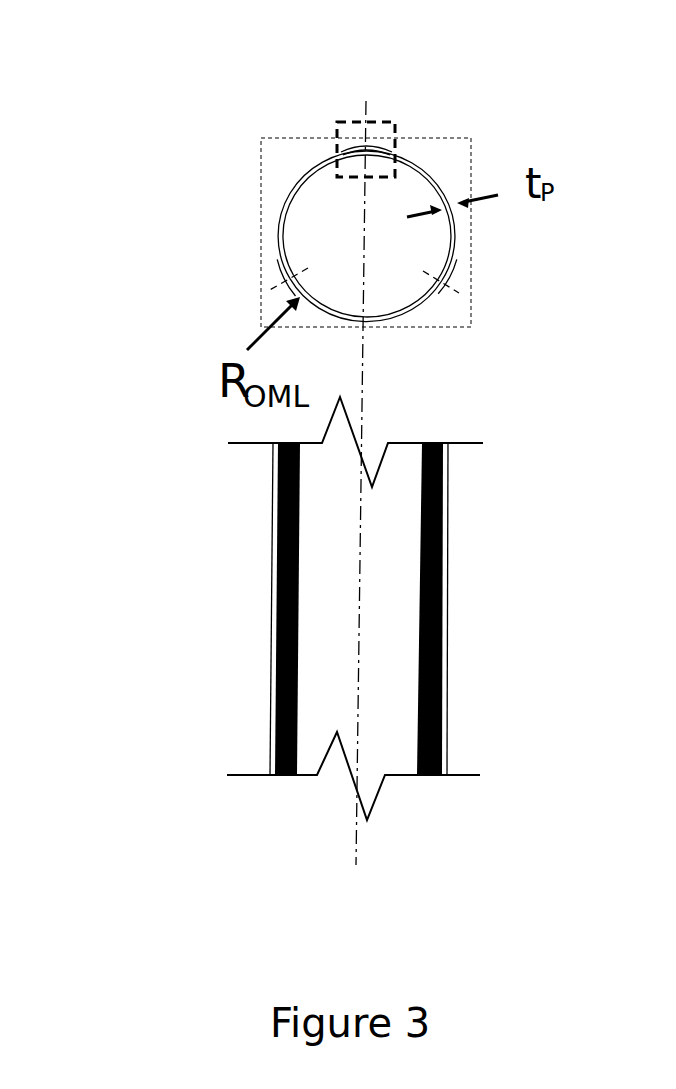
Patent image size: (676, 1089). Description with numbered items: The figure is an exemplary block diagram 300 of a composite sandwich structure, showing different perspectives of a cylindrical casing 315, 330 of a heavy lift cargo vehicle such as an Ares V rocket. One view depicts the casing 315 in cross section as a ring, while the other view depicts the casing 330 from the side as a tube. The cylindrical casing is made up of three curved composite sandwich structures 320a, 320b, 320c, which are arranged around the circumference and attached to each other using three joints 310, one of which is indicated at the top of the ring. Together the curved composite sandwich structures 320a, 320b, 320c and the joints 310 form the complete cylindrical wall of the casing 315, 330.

The block diagram 300 is at (199, 441).
The joint 310 is at (385, 117).
The cylindrical casing 315 is at (260, 232).
The curved composite sandwich structure 320a is at (295, 197).
The curved composite sandwich structure 320b is at (430, 172).
The curved composite sandwich structure 320c is at (400, 305).
The cylindrical casing 330 is at (465, 585).